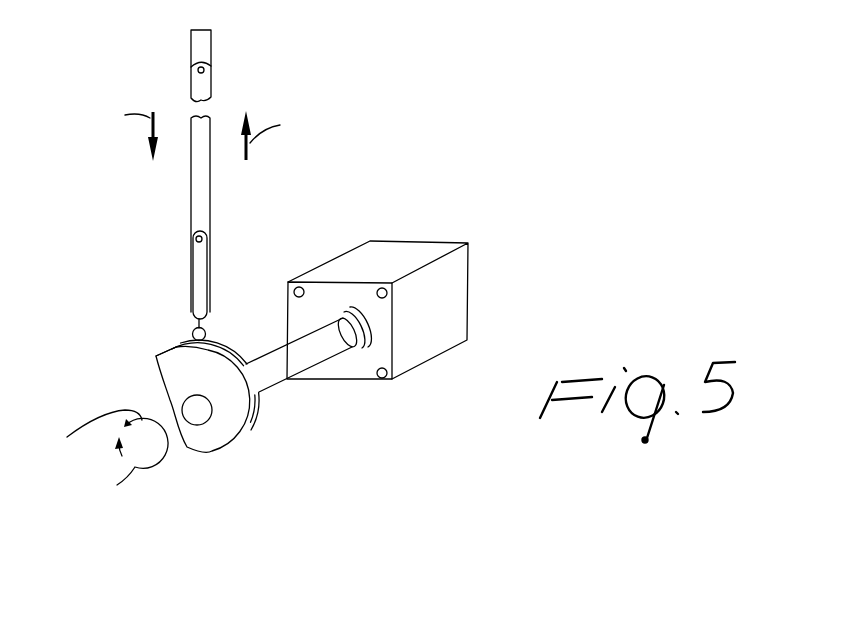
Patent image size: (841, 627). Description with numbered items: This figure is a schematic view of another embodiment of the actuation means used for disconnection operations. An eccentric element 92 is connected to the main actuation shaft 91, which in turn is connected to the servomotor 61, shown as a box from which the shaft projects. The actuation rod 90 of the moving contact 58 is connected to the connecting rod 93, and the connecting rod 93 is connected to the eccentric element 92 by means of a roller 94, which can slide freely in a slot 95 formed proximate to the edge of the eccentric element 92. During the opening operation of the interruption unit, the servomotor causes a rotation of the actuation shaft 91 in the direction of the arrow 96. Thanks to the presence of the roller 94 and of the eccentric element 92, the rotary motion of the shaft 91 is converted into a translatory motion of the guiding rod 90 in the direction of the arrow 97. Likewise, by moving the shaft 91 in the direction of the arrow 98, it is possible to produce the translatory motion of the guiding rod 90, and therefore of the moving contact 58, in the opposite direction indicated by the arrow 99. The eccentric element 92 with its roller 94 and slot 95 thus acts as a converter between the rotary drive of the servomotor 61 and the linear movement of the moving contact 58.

The moving contact 58 is at (214, 53).
The servomotor 61 is at (446, 240).
The actuation rod 90 is at (212, 203).
The main actuation shaft 91 is at (312, 373).
The eccentric element 92 is at (210, 431).
The connecting rod 93 is at (212, 283).
The roller 94 is at (185, 325).
The slot 95 is at (153, 354).
The arrow 96 is at (83, 445).
The arrow 97 is at (117, 124).
The arrow 98 is at (114, 478).
The arrow 99 is at (290, 120).